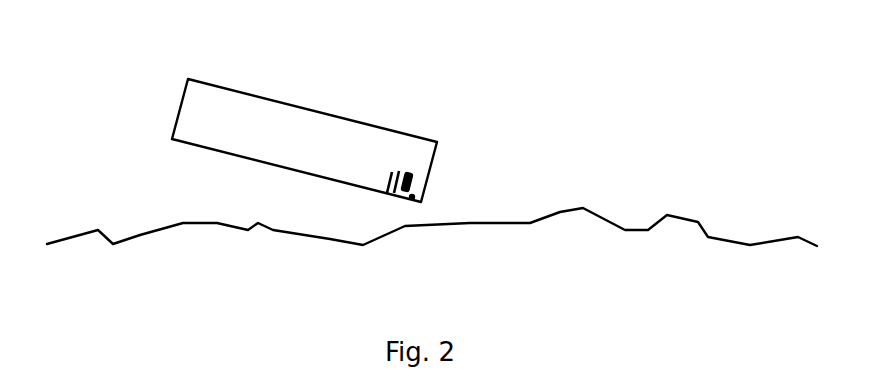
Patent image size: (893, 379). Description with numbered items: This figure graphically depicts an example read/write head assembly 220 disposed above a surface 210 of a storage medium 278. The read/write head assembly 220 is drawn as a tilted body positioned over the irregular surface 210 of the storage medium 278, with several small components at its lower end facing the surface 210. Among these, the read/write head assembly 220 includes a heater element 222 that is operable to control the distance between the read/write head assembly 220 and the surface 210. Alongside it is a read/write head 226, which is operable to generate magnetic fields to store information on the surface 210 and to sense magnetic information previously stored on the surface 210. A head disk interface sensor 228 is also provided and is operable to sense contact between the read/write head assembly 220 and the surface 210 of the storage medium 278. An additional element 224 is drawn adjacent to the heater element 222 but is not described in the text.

The surface 210 is at (583, 208).
The read/write head assembly 220 is at (228, 122).
The heater element 222 is at (366, 179).
The sensor / antenna element 224 is at (397, 177).
The read/write head 226 is at (409, 172).
The head disk interface sensor 228 is at (410, 200).
The storage medium 278 is at (497, 265).